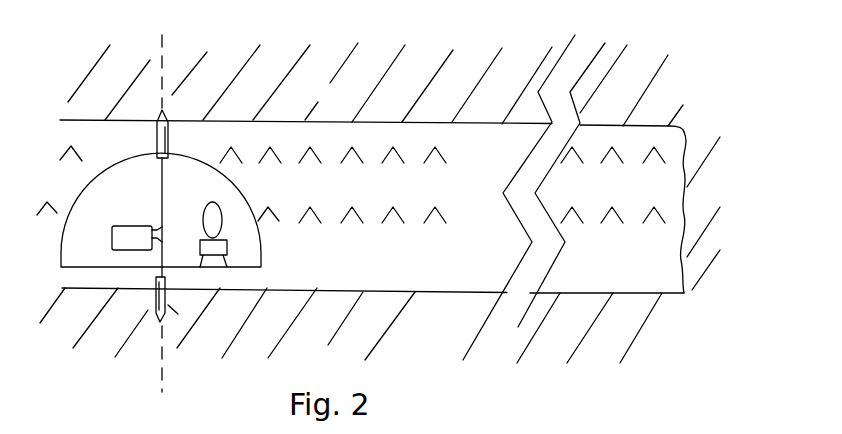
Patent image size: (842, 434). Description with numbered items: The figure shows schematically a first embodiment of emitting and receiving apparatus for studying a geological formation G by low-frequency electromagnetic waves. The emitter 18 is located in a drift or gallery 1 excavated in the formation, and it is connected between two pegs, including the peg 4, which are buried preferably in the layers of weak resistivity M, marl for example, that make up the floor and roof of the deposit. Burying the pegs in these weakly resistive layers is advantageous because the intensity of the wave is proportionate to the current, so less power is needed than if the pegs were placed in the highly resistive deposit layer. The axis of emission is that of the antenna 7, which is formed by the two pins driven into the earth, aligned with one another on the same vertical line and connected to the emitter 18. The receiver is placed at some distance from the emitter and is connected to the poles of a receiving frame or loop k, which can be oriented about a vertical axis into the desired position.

The drift 1 is at (125, 180).
The peg 4 is at (167, 113).
The antenna 7 is at (163, 183).
The emitting apparatus 18 is at (122, 240).
The receiving frame or loop k is at (216, 209).
The layers of weak resistivity M is at (380, 199).
The geological formation G is at (351, 206).